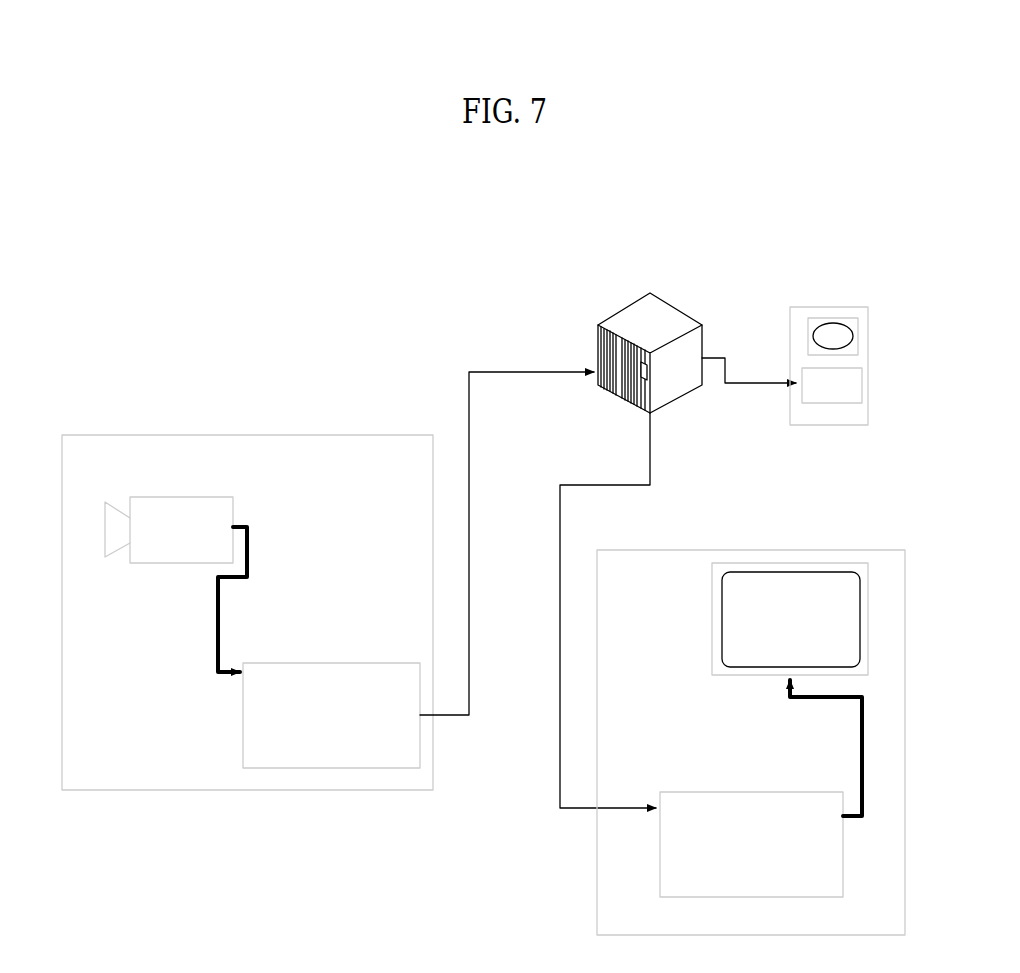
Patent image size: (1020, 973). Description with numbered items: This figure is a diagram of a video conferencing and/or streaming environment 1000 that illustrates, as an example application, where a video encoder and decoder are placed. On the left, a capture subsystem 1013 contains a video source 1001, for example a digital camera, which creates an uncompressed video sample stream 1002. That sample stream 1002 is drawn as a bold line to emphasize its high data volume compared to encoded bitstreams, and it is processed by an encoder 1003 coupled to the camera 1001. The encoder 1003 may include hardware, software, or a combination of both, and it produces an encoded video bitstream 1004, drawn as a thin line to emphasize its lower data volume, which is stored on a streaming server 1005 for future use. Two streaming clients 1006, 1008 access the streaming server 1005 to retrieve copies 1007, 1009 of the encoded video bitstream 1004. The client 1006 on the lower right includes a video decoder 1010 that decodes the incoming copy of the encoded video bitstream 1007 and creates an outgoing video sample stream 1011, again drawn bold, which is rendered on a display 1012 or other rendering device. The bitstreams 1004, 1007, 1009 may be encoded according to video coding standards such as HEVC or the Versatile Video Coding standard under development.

The video conferencing and/or streaming environment 1000 is at (143, 123).
The video source 1001 is at (183, 495).
The uncompressed video sample stream 1002 is at (216, 630).
The encoder 1003 is at (342, 661).
The encoded video bitstream 1004 is at (468, 396).
The streaming server 1005 is at (597, 350).
The streaming client 1006 is at (598, 925).
The copy of the encoded video bitstream 1007 is at (559, 668).
The streaming client 1008 is at (865, 345).
The copy of the encoded video bitstream 1009 is at (737, 385).
The video decoder 1010 is at (660, 885).
The outgoing video sample stream 1011 is at (860, 745).
The display 1012 is at (712, 620).
The capture subsystem 1013 is at (176, 790).